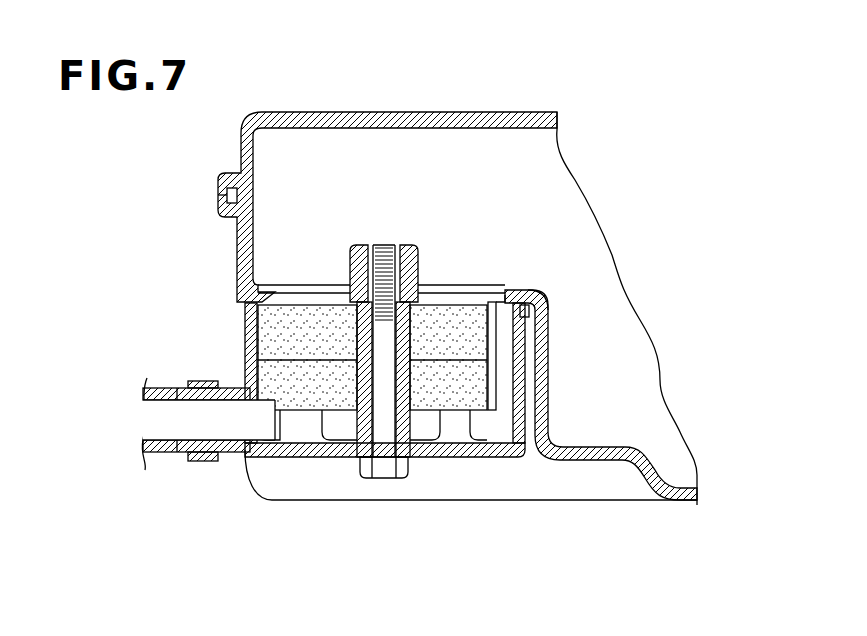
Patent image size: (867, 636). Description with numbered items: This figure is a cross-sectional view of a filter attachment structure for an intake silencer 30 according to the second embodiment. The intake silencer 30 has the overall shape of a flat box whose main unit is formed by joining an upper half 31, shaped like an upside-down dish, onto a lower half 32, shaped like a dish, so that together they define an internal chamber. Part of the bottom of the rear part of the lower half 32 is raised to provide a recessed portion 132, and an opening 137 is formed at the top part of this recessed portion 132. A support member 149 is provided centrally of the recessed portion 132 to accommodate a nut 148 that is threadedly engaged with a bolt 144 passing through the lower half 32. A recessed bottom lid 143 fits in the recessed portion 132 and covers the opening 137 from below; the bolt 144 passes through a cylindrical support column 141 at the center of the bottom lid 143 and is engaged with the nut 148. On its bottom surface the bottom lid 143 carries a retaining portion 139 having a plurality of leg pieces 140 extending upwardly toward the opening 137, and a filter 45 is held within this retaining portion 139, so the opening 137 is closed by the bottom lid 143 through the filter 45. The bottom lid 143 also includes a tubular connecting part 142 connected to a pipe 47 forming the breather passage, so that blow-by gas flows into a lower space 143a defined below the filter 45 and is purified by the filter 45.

The intake silencer 30 is at (537, 114).
The upper half 31 is at (458, 112).
The lower half 32 is at (680, 502).
The filter 45 is at (447, 330).
The pipe 47 is at (140, 462).
The recessed portion 132 is at (528, 458).
The opening 137 is at (494, 330).
The retaining portion 139 is at (545, 295).
The leg pieces 140 is at (462, 445).
The cylindrical support column 141 is at (418, 395).
The tubular connecting part 142 is at (180, 456).
The bottom lid 143 is at (304, 456).
The lower space 143a is at (297, 430).
The bolt 144 is at (384, 440).
The nut 148 is at (373, 243).
The support member 149 is at (352, 265).